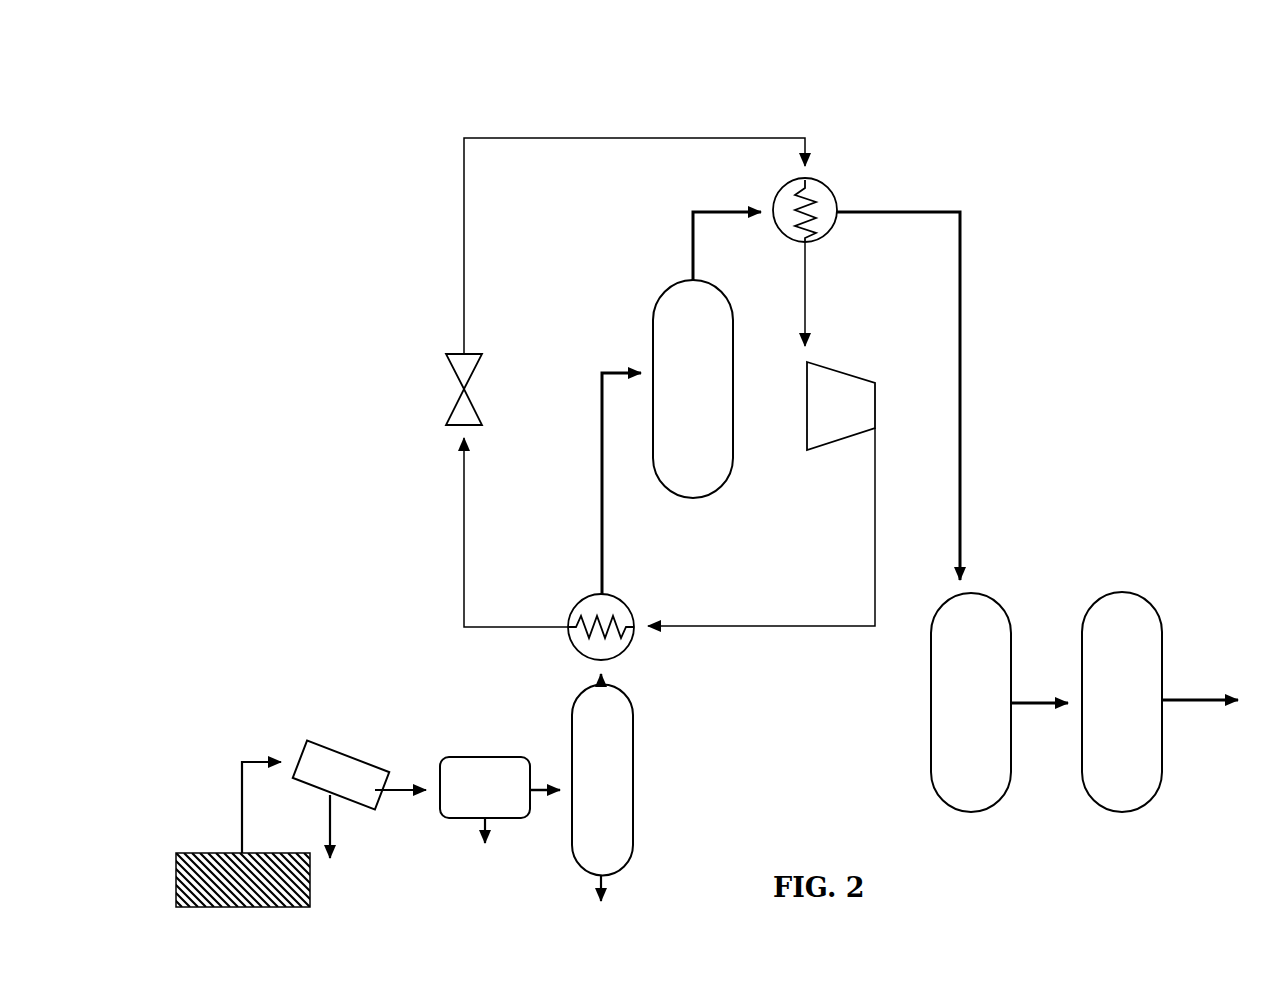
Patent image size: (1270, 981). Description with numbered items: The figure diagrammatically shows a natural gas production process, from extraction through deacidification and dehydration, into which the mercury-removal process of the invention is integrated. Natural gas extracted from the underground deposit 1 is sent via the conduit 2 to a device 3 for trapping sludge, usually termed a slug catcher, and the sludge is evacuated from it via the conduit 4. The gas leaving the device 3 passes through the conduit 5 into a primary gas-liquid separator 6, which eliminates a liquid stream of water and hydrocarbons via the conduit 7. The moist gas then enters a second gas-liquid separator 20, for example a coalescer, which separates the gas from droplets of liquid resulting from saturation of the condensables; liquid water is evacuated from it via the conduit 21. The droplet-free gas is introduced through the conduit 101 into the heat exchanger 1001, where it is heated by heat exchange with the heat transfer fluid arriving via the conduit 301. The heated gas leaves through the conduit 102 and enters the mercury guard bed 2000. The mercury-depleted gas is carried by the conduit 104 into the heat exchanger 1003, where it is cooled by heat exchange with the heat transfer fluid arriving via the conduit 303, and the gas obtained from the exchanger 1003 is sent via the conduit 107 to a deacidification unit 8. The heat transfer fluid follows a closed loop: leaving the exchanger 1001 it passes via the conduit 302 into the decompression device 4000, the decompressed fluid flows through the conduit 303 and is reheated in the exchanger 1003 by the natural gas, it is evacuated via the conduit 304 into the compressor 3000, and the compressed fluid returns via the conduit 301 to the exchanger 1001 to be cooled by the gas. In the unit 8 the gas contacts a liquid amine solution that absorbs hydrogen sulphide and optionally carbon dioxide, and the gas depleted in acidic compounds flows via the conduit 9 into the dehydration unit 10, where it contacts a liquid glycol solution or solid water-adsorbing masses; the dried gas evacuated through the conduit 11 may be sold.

The underground deposit 1 is at (210, 866).
The conduit 2 is at (258, 760).
The device for trapping sludge 3 is at (330, 742).
The conduit 4 is at (331, 828).
The conduit 5 is at (433, 791).
The primary gas-liquid separator 6 is at (510, 814).
The conduit 7 is at (493, 855).
The second gas-liquid separator 20 is at (634, 800).
The conduit 21 is at (597, 892).
The conduit 101 is at (607, 677).
The heat exchanger 1001 is at (596, 596).
The conduit 102 is at (596, 498).
The mercury guard bed 2000 is at (733, 462).
The conduit 104 is at (689, 254).
The heat exchanger 1003 is at (780, 190).
The conduit 303 is at (462, 274).
The decompression device 4000 is at (456, 405).
The conduit 302 is at (462, 542).
The conduit 304 is at (807, 310).
The compressor 3000 is at (890, 390).
The conduit 301 is at (776, 627).
The conduit 107 is at (962, 468).
The deacidification unit 8 is at (930, 748).
The conduit 9 is at (1040, 705).
The dehydration unit 10 is at (1160, 774).
The conduit 11 is at (1226, 704).